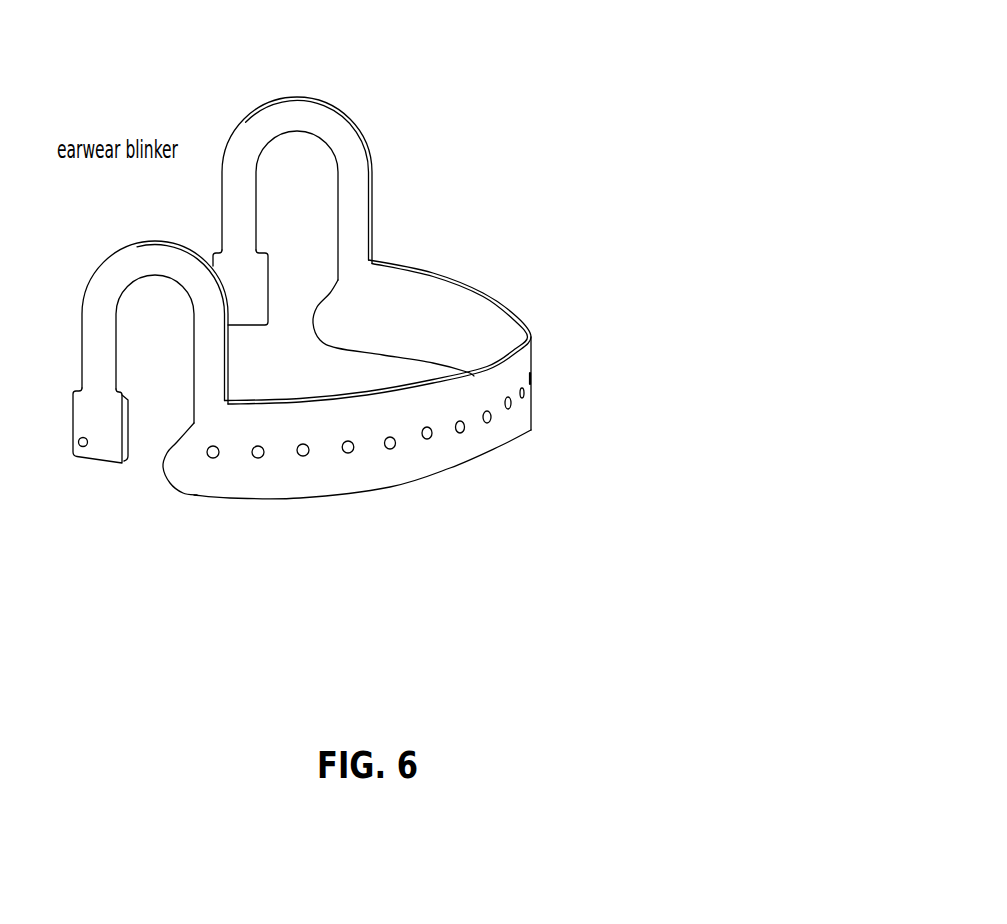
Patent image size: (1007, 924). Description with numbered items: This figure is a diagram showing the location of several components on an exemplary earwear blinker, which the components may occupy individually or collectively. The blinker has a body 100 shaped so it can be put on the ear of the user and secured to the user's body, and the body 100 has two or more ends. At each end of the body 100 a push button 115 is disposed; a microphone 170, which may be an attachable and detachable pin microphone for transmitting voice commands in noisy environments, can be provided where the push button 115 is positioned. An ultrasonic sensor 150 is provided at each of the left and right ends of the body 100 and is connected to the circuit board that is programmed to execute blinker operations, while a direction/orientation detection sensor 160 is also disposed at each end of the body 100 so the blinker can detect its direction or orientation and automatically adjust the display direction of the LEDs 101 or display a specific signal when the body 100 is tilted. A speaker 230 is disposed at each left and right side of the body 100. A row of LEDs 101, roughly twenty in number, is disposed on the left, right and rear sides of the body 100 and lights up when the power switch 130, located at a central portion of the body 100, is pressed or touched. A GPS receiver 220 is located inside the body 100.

The body 100 is at (530, 352).
The LEDs 101 is at (513, 403).
The power switch 130 is at (522, 422).
The GPS receiver 220 is at (500, 432).
The push button 115 is at (268, 273).
The ultrasonic sensor 150 is at (302, 312).
The direction/orientation detection sensor 160 is at (351, 342).
The speaker 230 is at (268, 370).
The microphone 170 is at (283, 400).